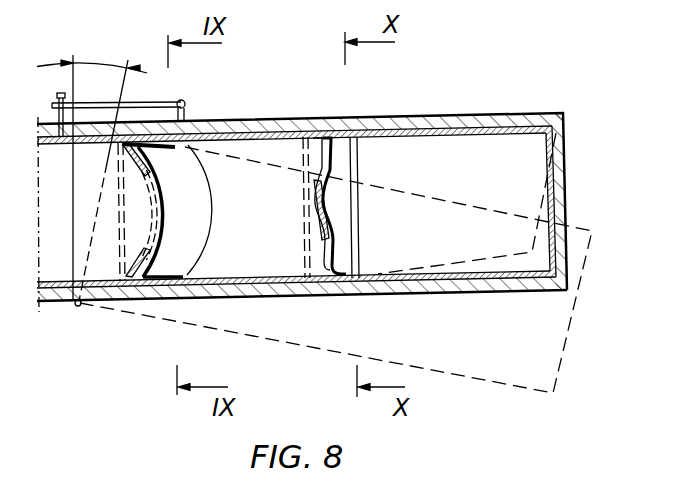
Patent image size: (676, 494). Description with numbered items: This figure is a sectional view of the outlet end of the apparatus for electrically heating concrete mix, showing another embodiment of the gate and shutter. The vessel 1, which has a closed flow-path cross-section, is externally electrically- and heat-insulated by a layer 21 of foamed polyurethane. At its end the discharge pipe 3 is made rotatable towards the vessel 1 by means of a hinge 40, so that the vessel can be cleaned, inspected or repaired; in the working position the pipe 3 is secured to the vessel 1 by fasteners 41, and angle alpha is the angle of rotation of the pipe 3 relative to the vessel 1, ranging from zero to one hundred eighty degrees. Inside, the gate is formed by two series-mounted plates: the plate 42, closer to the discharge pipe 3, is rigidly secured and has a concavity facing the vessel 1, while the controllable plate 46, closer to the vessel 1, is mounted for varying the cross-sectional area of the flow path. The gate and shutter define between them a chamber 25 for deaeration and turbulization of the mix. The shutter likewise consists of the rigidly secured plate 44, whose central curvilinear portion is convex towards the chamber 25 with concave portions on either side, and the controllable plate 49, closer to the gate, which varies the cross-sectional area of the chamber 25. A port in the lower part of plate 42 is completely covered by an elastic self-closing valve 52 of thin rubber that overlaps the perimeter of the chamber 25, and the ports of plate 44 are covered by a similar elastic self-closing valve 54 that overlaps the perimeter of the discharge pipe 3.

The vessel 1 is at (48, 121).
The discharge pipe 3 is at (421, 284).
The layer of foamed polyurethane 21 is at (452, 121).
The chamber 25 is at (254, 128).
The hinge 40 is at (77, 306).
The fasteners 41 is at (157, 84).
The plate 42 is at (157, 163).
The plate 44 is at (337, 199).
The controllable plate 46 is at (116, 268).
The controllable plate 49 is at (305, 256).
The elastic self-closing valve 52 is at (154, 272).
The elastic self-closing valve 54 is at (342, 280).